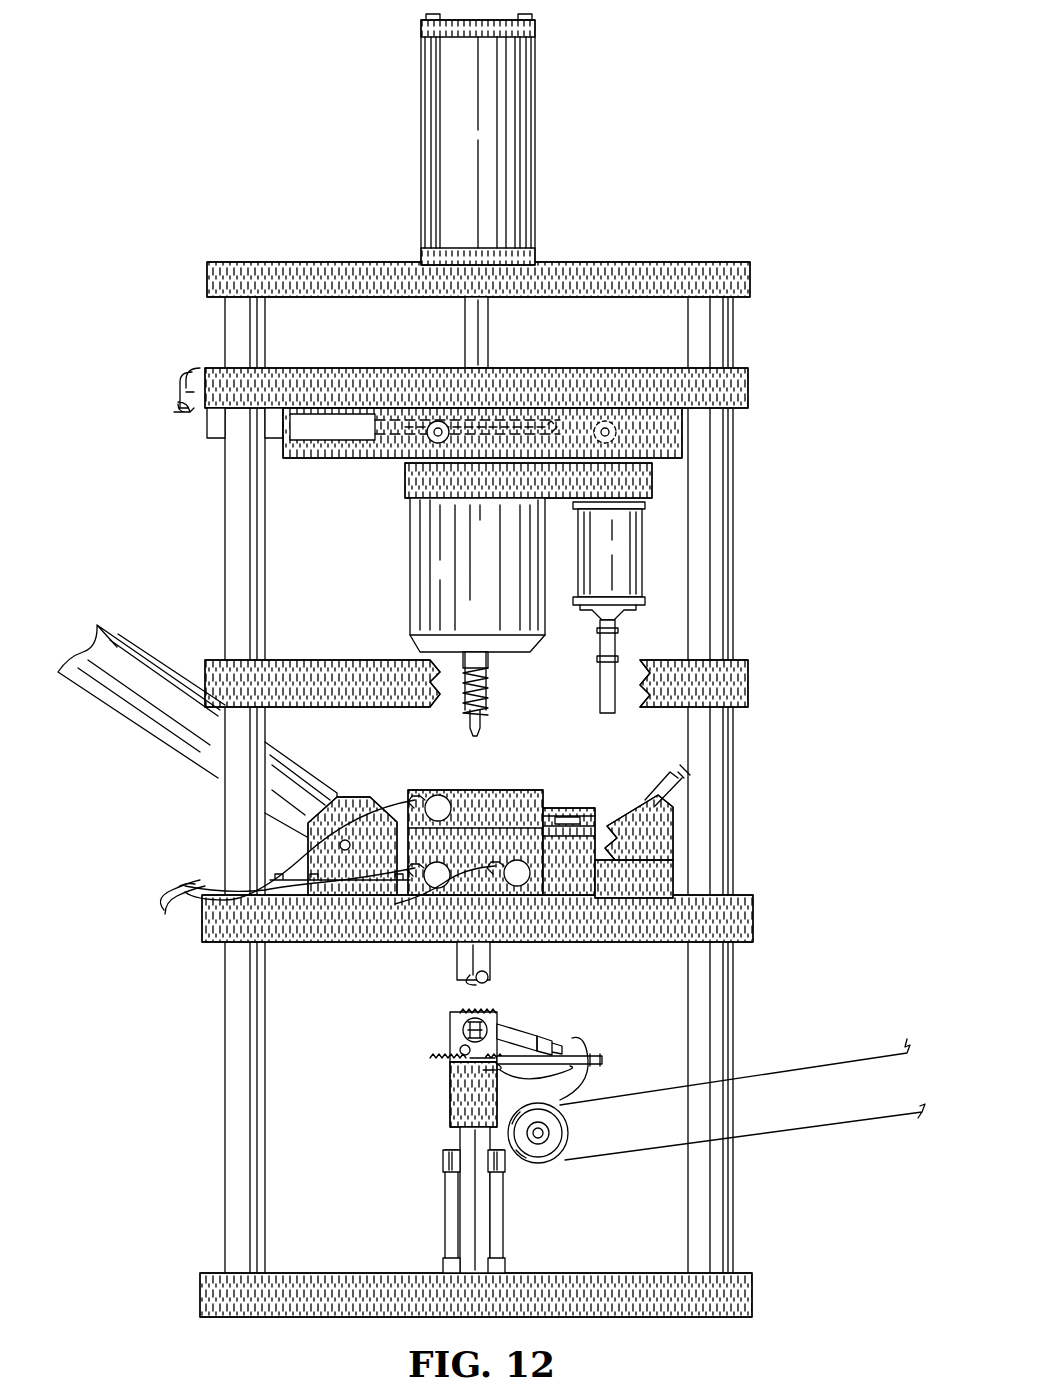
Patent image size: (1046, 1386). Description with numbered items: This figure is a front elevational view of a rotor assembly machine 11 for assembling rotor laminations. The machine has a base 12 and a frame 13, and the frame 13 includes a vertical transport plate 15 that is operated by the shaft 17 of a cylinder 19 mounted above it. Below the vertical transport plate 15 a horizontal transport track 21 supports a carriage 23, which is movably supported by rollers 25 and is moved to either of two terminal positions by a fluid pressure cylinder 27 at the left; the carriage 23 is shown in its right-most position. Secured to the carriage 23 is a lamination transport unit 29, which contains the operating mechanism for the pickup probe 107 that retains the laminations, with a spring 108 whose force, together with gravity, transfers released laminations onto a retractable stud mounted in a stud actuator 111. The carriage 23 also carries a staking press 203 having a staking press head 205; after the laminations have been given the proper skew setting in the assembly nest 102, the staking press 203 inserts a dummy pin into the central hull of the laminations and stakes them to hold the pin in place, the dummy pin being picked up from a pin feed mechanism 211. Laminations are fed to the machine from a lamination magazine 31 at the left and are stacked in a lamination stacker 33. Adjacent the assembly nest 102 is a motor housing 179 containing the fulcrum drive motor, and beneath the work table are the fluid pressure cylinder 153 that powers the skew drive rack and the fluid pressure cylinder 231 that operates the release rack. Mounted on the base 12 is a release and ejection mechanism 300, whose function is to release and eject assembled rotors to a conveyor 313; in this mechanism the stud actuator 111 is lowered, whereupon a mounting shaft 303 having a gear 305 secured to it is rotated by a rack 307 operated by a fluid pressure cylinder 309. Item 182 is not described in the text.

The rotor assembly machine 11 is at (489, 767).
The base 12 is at (752, 1295).
The frame 13 is at (220, 836).
The vertical transport plate 15 is at (594, 372).
The shaft 17 is at (491, 326).
The cylinder 19 is at (538, 186).
The horizontal transport track 21 is at (322, 458).
The carriage 23 is at (405, 483).
The rollers 25 is at (417, 443).
The fluid pressure cylinder 27 is at (202, 440).
The lamination transport unit 29 is at (410, 577).
The lamination magazine 31 is at (190, 766).
The lamination stacker 33 is at (356, 794).
The assembly nest 102 is at (528, 792).
The pickup probe 107 is at (480, 732).
The spring 108 is at (486, 694).
The stud actuator 111 is at (544, 1038).
The fluid pressure cylinder 153 is at (416, 903).
The motor housing 179 is at (563, 808).
The rollers 182 is at (442, 798).
The staking press 203 is at (640, 566).
The staking press head 205 is at (616, 660).
The pin feed mechanism 211 is at (642, 798).
The fluid pressure cylinder 231 is at (520, 903).
The release and ejection mechanism 300 is at (465, 1058).
The mounting shaft 303 is at (456, 1014).
The gear 305 is at (478, 1016).
The rack 307 is at (442, 1060).
The fluid pressure cylinder 309 is at (600, 1065).
The conveyor 313 is at (652, 1158).